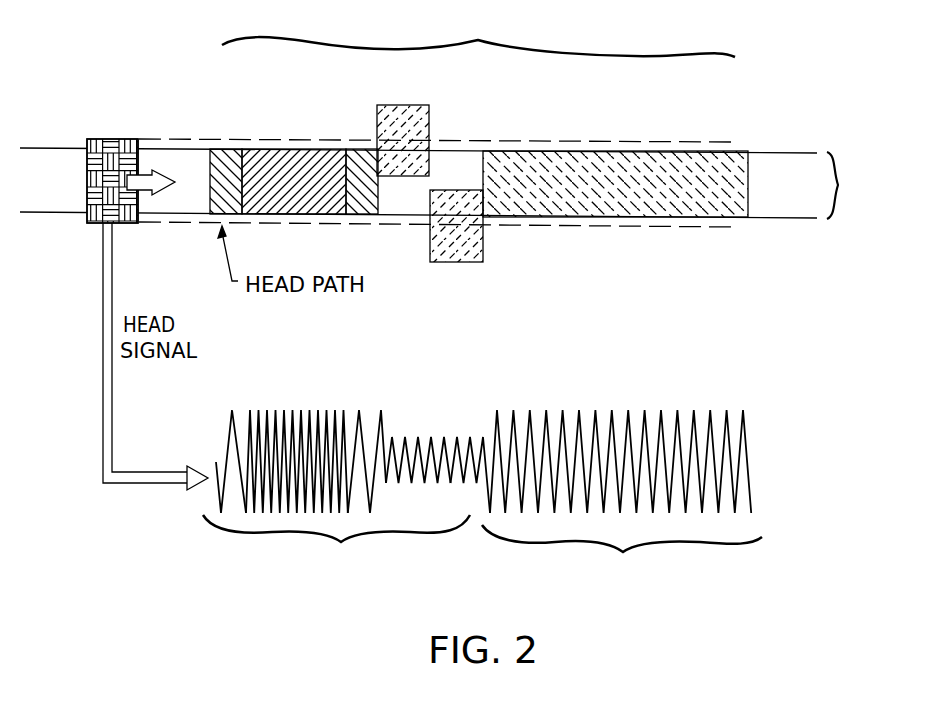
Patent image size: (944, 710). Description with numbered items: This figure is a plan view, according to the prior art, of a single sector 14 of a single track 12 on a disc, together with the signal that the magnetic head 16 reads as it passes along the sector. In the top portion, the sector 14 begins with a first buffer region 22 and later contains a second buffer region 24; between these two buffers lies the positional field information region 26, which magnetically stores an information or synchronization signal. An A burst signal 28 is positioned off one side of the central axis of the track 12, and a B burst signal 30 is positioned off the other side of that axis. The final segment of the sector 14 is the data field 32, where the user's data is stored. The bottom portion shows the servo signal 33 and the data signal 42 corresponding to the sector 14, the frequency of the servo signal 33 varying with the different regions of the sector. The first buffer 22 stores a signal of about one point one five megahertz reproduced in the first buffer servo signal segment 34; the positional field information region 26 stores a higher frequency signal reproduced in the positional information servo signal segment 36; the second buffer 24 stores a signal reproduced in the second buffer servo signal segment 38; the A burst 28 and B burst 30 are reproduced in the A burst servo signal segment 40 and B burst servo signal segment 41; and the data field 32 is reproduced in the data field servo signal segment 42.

The track 12 is at (443, 183).
The sector 14 is at (478, 32).
The read head 16 is at (97, 138).
The first buffer region 22 is at (223, 149).
The second buffer region 24 is at (363, 153).
The positional field information region 26 is at (317, 160).
The A burst signal 28 is at (417, 113).
The B burst signal 30 is at (443, 242).
The data field 32 is at (525, 167).
The servo signal 33 is at (336, 546).
The first buffer servo signal segment 34 is at (232, 408).
The positional information servo signal segment 36 is at (294, 395).
The second buffer servo signal segment 38 is at (358, 408).
The A burst servo signal segment 40 is at (402, 432).
The B burst servo signal segment 41 is at (457, 432).
The data signal 42 is at (622, 498).